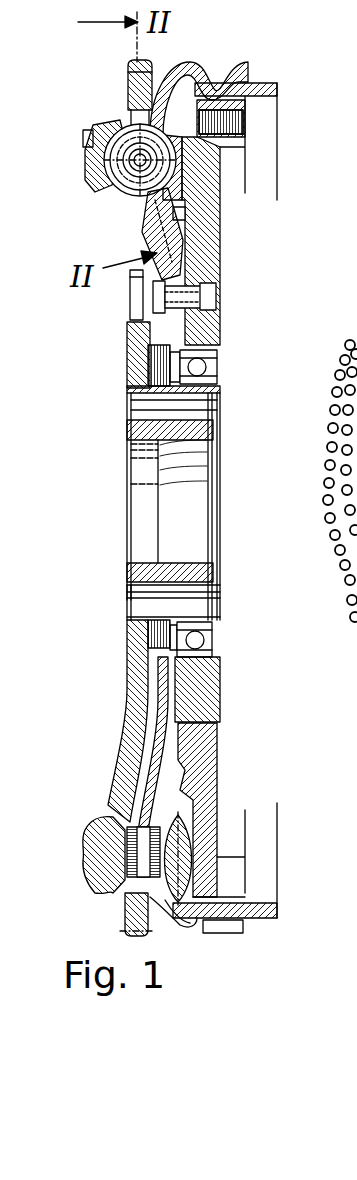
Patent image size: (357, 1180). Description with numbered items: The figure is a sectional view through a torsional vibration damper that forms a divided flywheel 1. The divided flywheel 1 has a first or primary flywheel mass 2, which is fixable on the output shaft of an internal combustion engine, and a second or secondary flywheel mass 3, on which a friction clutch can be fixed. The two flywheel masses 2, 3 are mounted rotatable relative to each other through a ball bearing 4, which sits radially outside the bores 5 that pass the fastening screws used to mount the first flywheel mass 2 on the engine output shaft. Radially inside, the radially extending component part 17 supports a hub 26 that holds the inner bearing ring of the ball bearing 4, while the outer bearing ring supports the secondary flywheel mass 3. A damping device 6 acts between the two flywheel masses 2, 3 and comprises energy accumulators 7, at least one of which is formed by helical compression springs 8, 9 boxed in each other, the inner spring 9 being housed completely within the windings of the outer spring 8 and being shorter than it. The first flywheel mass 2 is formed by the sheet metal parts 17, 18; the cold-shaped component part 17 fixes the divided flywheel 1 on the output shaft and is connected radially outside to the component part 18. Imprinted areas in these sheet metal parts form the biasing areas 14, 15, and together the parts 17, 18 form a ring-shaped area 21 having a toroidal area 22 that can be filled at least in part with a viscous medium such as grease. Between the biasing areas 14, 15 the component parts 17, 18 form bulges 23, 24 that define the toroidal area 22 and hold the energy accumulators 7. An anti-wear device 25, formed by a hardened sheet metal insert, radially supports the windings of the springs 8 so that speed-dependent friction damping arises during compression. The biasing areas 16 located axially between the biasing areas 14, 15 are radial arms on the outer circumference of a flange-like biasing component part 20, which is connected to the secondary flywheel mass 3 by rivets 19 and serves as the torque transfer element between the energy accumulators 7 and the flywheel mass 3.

The divided flywheel 1 is at (239, 58).
The first or primary flywheel mass 2 is at (137, 347).
The second or secondary flywheel mass 3 is at (210, 256).
The bearing 4 is at (205, 362).
The bores 5 is at (143, 603).
The damping device 6 is at (92, 176).
The energy accumulators 7 is at (115, 193).
The helical compression spring 8 is at (98, 184).
The helical compression spring 9 is at (132, 210).
The biasing area 14 is at (110, 858).
The biasing area 15 is at (197, 845).
The biasing areas / radial arms 16 is at (120, 843).
The component part 17 is at (138, 750).
The component part 18 is at (193, 830).
The rivets 19 is at (195, 300).
The flange-like biasing component part 20 is at (168, 712).
The ring-shaped area 21 is at (215, 213).
The toroidal area 22 is at (218, 192).
The bulge 23 is at (192, 150).
The bulge 24 is at (88, 162).
The anti-wear device 25 is at (130, 132).
The hub 26 is at (147, 433).